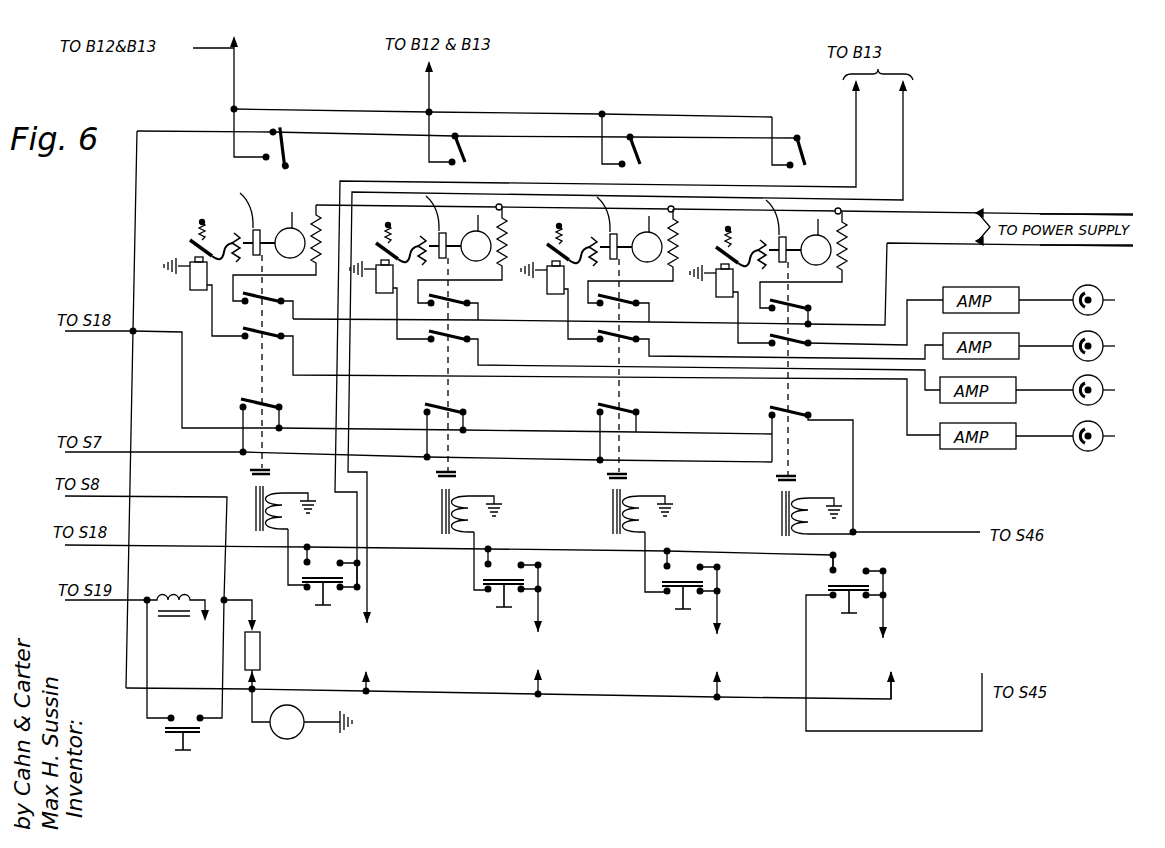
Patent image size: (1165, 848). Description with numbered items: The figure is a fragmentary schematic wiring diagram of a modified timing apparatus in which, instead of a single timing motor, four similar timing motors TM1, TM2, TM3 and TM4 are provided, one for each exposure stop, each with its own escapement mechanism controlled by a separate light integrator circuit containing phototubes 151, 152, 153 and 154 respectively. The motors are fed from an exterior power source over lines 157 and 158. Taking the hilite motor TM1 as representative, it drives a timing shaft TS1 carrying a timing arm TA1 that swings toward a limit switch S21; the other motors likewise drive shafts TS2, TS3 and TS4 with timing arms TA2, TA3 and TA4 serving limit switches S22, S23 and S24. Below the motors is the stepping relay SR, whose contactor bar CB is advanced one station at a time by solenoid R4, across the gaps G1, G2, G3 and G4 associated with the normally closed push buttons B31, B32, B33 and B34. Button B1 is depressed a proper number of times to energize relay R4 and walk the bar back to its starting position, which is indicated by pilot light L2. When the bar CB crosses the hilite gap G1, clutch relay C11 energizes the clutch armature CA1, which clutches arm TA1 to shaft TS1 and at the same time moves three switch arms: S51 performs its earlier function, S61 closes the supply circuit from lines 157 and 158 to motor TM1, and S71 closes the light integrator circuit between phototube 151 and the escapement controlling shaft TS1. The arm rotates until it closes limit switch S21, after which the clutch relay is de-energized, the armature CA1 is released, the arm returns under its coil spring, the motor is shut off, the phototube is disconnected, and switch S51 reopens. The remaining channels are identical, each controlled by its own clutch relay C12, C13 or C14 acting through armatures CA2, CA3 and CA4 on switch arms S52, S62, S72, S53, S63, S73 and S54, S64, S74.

The limit switch S21 is at (290, 149).
The switch S22 is at (463, 153).
The switch S23 is at (632, 155).
The switch S24 is at (801, 154).
The timing arm TA1 is at (245, 324).
The timing arm TA2 is at (430, 327).
The timing arm TA3 is at (601, 328).
The timing arm TA4 is at (770, 331).
The timing shaft TS1 is at (202, 244).
The timing shaft TS2 is at (388, 247).
The timing shaft TS3 is at (559, 248).
The timing shaft TS4 is at (728, 251).
The timing motor TM1 is at (296, 230).
The timing motor TM2 is at (482, 232).
The timing motor TM3 is at (653, 233).
The timing motor TM4 is at (822, 236).
The switch arm S61 is at (251, 300).
The switch arm S62 is at (465, 295).
The switch arm S63 is at (640, 298).
The switch arm S64 is at (807, 303).
The switch arm S71 is at (250, 336).
The switch arm S72 is at (440, 335).
The switch arm S73 is at (612, 335).
The switch arm S74 is at (804, 336).
The switch arm S51 is at (243, 398).
The switch S52 is at (426, 402).
The switch S53 is at (596, 404).
The switch arm S54 is at (770, 403).
The clutch armature CA1 is at (249, 473).
The clutch armature CA2 is at (436, 475).
The clutch armature CA3 is at (606, 477).
The clutch armature CA4 is at (776, 479).
The clutch relay C11 is at (284, 521).
The clutch relay C12 is at (476, 522).
The clutch relay C13 is at (647, 522).
The clutch relay C14 is at (800, 501).
The push button B31 is at (318, 600).
The push button B32 is at (500, 601).
The push button B33 is at (680, 599).
The push button B34 is at (850, 613).
The hilite gap G1 is at (378, 647).
The gap G2 is at (542, 646).
The gap G3 is at (708, 650).
The gap G4 is at (905, 659).
The solenoid R4 is at (182, 579).
The contactor bar CB is at (262, 655).
The button B1 is at (195, 738).
The pilot light L2 is at (288, 739).
The stepping relay SR is at (433, 700).
The power supply line 157 is at (1080, 213).
The power supply line 158 is at (1070, 247).
The phototube 151 is at (1110, 436).
The phototube 152 is at (1110, 390).
The phototube 153 is at (1110, 346).
The phototube 154 is at (1110, 300).